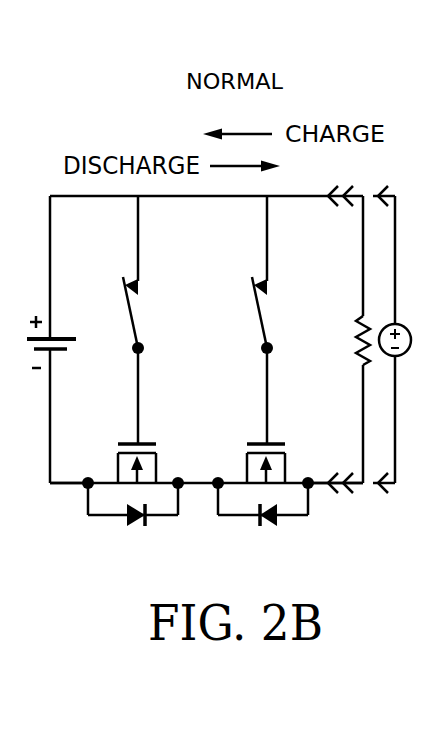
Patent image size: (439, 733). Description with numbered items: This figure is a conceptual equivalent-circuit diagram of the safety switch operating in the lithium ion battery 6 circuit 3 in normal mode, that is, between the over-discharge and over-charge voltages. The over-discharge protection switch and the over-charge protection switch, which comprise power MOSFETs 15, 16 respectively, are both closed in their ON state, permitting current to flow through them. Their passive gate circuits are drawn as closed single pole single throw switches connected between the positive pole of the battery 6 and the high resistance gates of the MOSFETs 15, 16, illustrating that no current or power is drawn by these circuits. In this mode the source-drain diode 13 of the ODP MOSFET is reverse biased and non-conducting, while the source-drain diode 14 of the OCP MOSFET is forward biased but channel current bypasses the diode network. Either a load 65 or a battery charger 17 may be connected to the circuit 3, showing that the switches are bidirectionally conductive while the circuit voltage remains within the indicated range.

The circuit 3 is at (297, 196).
The lithium ion battery 6 is at (26, 382).
The source-drain diode of the ODP MOSFET 13 is at (148, 521).
The source-drain diode of the OCP MOSFET 14 is at (278, 521).
The power MOSFET 15 is at (68, 503).
The power MOSFET 16 is at (332, 506).
The battery charger 17 is at (403, 327).
The load 65 is at (357, 322).